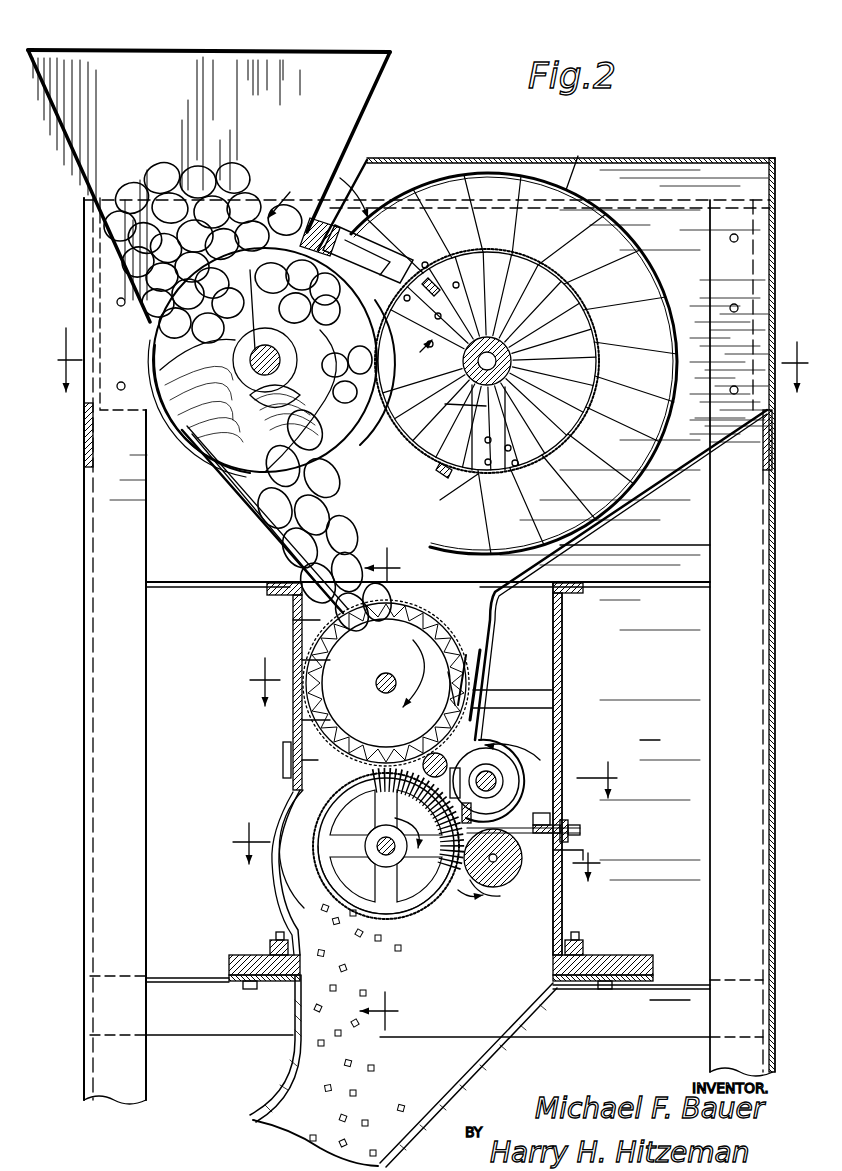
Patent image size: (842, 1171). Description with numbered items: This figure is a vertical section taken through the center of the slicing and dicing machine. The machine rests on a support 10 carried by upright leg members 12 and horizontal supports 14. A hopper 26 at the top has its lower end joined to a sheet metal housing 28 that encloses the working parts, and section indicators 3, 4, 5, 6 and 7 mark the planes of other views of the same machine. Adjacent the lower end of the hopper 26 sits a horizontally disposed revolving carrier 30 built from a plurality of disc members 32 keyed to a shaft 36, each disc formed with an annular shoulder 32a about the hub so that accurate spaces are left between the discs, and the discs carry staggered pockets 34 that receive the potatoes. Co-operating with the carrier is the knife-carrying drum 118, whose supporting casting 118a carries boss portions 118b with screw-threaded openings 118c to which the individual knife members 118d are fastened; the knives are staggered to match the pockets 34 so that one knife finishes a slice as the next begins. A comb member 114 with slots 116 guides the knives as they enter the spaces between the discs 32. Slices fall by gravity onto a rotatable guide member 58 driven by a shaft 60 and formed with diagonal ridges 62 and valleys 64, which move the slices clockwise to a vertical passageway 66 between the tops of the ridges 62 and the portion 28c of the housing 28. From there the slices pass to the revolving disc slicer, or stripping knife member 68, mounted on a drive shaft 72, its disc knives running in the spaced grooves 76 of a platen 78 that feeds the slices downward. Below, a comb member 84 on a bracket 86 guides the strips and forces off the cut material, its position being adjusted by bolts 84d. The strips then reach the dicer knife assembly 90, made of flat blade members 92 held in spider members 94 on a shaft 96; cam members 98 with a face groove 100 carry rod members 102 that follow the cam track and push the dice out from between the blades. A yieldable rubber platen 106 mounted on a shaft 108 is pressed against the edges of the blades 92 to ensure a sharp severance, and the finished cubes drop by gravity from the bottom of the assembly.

The section line 3- 3 is at (426, 360).
The section line 4- 4 is at (387, 789).
The section line 5- 5 is at (424, 728).
The section line 6- 6 is at (413, 852).
The view arrow 7 is at (424, 176).
The support 10 is at (245, 955).
The upright leg members 12 is at (128, 892).
The horizontal supports 14 is at (192, 980).
The hopper 26 is at (138, 56).
The sheet metal housing 28 is at (288, 540).
The portion of the housing 28c is at (473, 690).
The revolving carrier 30 is at (230, 472).
The disc members 32 is at (178, 423).
The annular shoulders 32a is at (236, 356).
The pockets 34 is at (258, 474).
The shaft 36 is at (250, 471).
The rotatable guide member 58 is at (308, 634).
The driving shaft 60 is at (382, 680).
The ridges 62 is at (308, 724).
The valleys 64 is at (446, 666).
The vertical passageway 66 is at (473, 663).
The stripping knife member 68 is at (520, 747).
The drive shaft 72 is at (494, 780).
The spaced grooves 76 is at (428, 724).
The platen 78 is at (433, 752).
The comb member 84 is at (582, 826).
The adjusting bolts 84d is at (580, 837).
The bracket 86 is at (580, 848).
The cutting drum 90 is at (320, 855).
The flat blade members 92 is at (283, 762).
The spider members 94 is at (425, 885).
The shaft 96 is at (393, 873).
The cam members 98 is at (295, 795).
The face groove 100 is at (308, 814).
The rod members 102 is at (447, 880).
The platen 106 is at (517, 880).
The shaft 108 is at (500, 890).
The comb member 114 is at (360, 220).
The slots 116 is at (478, 372).
The blower wheel 118 is at (422, 448).
The wheel blade 118a is at (419, 355).
The wheel blade 118b is at (441, 403).
The wheel blade 118c is at (439, 495).
The spiral casing 118d is at (518, 177).